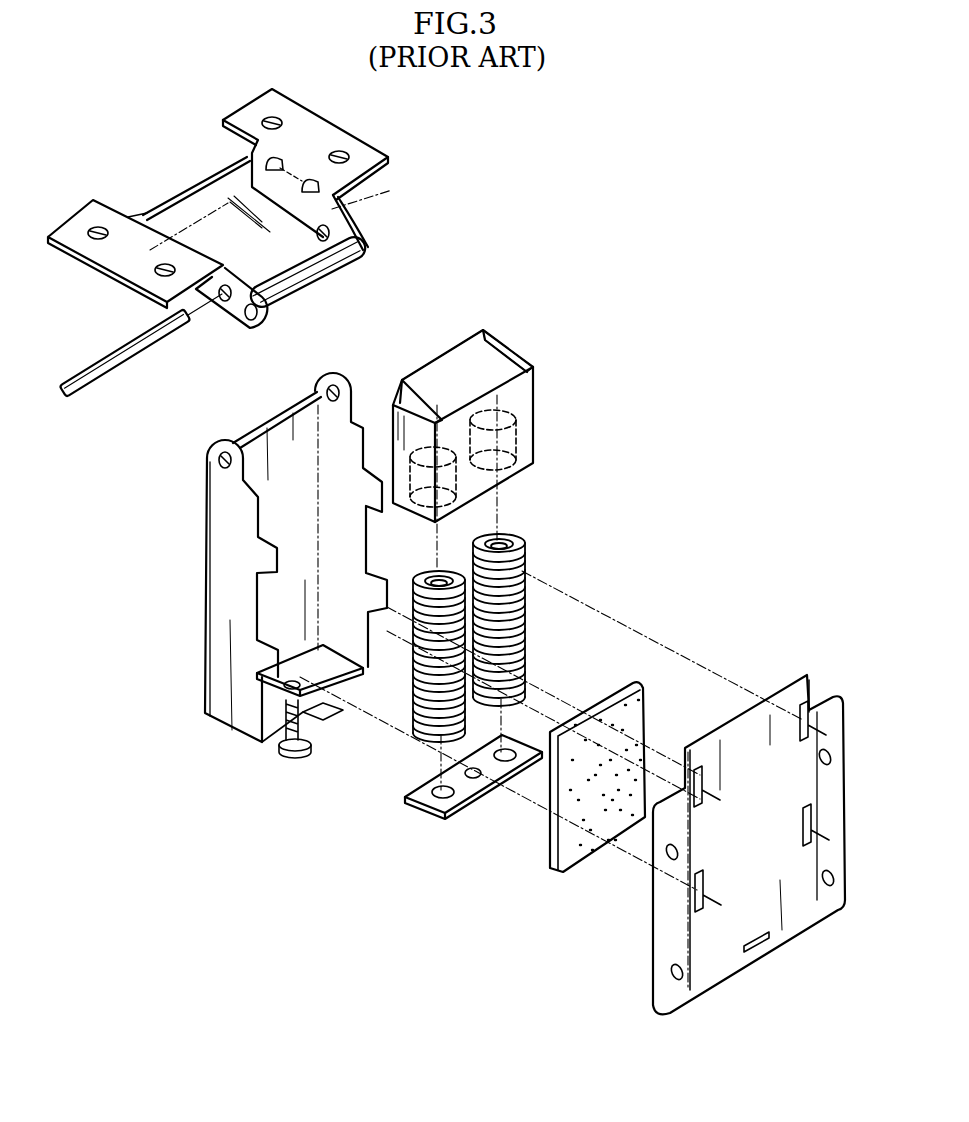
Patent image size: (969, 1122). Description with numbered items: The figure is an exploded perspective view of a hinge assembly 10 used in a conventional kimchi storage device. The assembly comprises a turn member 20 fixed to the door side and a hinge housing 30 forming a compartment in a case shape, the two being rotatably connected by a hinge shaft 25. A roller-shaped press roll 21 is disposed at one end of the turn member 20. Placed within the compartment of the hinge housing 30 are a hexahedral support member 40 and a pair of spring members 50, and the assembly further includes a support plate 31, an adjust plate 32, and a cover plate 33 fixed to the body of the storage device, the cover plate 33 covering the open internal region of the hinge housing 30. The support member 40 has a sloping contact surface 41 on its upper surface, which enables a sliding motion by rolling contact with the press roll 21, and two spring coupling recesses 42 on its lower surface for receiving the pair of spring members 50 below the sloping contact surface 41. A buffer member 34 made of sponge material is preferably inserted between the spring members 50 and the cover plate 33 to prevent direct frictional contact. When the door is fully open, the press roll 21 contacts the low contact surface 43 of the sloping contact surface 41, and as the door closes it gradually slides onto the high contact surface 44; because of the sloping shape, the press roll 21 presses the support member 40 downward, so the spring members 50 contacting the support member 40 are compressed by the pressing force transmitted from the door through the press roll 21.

The hinge assembly 10 is at (546, 181).
The turn member 20 is at (323, 127).
The press roll 21 is at (330, 286).
The hinge shaft 25 is at (110, 374).
The hinge housing 30 is at (215, 606).
The support plate 31 is at (350, 694).
The adjust plate 32 is at (420, 810).
The cover plate 33 is at (837, 810).
The buffer member 34 is at (553, 857).
The support member 40 is at (502, 418).
The sloping contact surface 41 is at (483, 324).
The spring coupling recesses 42 is at (458, 483).
The low contact surface 43 is at (513, 363).
The high contact surface 44 is at (480, 338).
The spring members 50 is at (538, 580).